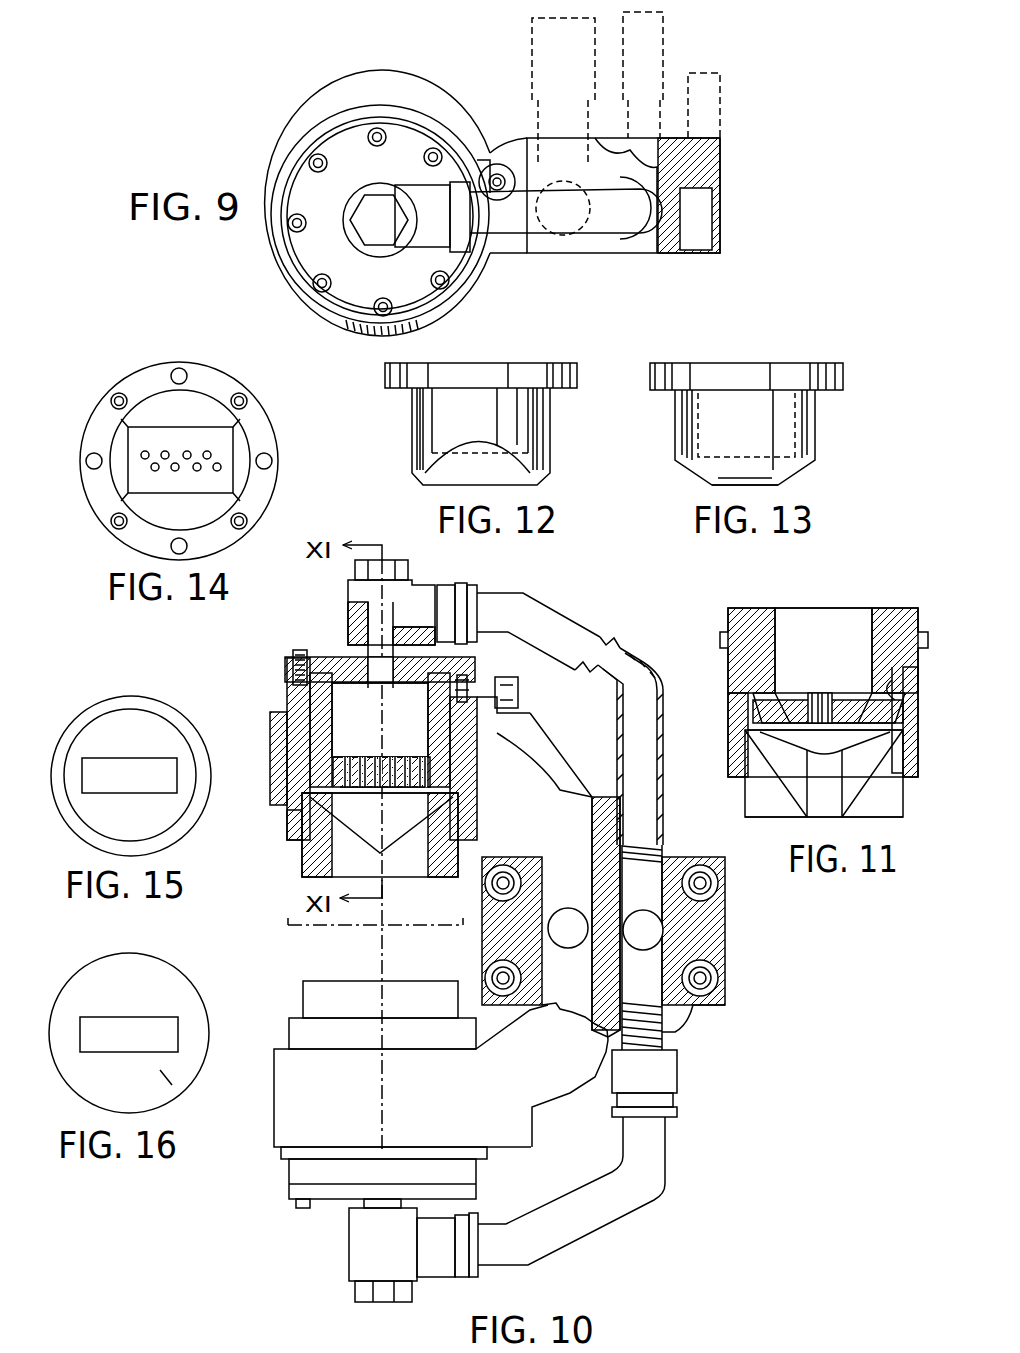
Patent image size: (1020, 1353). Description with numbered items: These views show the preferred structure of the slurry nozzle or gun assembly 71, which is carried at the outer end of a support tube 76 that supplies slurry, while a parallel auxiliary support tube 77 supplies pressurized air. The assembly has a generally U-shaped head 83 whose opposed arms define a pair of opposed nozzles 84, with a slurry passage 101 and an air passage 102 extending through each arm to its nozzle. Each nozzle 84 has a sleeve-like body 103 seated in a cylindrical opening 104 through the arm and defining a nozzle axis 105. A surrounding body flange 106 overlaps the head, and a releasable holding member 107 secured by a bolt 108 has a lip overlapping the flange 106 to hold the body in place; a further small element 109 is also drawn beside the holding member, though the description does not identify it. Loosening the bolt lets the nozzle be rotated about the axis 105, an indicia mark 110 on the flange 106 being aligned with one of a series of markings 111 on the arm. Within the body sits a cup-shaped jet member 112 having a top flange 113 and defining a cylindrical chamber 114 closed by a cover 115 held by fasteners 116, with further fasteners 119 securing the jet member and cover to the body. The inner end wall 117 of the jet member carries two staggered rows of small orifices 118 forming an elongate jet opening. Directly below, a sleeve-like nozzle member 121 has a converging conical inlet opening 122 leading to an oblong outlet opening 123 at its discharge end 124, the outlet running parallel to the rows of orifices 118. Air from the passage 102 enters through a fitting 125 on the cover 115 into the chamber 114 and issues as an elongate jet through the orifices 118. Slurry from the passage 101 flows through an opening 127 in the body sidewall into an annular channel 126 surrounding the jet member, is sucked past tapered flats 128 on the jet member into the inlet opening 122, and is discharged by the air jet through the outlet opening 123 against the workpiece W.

In FIG. 9, the gun assembly 71 is at (363, 58).
In FIG. 10, the gun assembly 71 is at (695, 1098).
In FIG. 9, the support tube 76 is at (532, 42).
In FIG. 10, the support tube 76 is at (560, 935).
In FIG. 9, the auxiliary support tube 77 is at (663, 36).
In FIG. 10, the auxiliary support tube 77 is at (655, 932).
In FIG. 10, the head 83 is at (712, 915).
In FIG. 10, the nozzle 84 is at (296, 846).
In FIG. 10, the slurry passage 101 is at (538, 785).
In FIG. 10, the air passage 102 is at (617, 665).
In FIG. 11, the body 103 is at (738, 690).
In FIG. 10, the body 103 is at (290, 735).
In FIG. 10, the cylindrical opening 104 is at (280, 760).
In FIG. 10, the nozzle axis 105 is at (380, 750).
In FIG. 9, the body flange 106 is at (300, 255).
In FIG. 10, the body flange 106 is at (290, 700).
In FIG. 9, the holding member 107 is at (498, 162).
In FIG. 10, the holding member 107 is at (468, 690).
In FIG. 10, the bolt 108 is at (530, 660).
In FIG. 10, the set screw 109 is at (518, 702).
In FIG. 9, the indicia mark 110 is at (388, 317).
In FIG. 9, the indicia markings 111 is at (372, 338).
In FIG. 12, the jet member 112 is at (554, 442).
In FIG. 13, the jet member 112 is at (818, 417).
In FIG. 11, the jet member 112 is at (760, 650).
In FIG. 10, the jet member 112 is at (300, 755).
In FIG. 10, the top flange 113 is at (298, 672).
In FIG. 11, the cylindrical chamber 114 is at (824, 620).
In FIG. 10, the cylindrical chamber 114 is at (345, 690).
In FIG. 9, the cover 115 is at (312, 262).
In FIG. 10, the cover 115 is at (322, 660).
In FIG. 10, the fasteners 116 is at (298, 650).
In FIG. 11, the end wall 117 is at (813, 697).
In FIG. 10, the end wall 117 is at (430, 768).
In FIG. 14, the orifices 118 is at (165, 452).
In FIG. 11, the orifices 118 is at (833, 700).
In FIG. 10, the orifices 118 is at (430, 780).
In FIG. 10, the fasteners 119 is at (478, 640).
In FIG. 11, the nozzle member 121 is at (760, 795).
In FIG. 15, the nozzle member 121 is at (137, 692).
In FIG. 16, the nozzle member 121 is at (100, 957).
In FIG. 10, the nozzle member 121 is at (442, 875).
In FIG. 11, the inlet opening 122 is at (868, 750).
In FIG. 15, the inlet opening 122 is at (92, 728).
In FIG. 10, the inlet opening 122 is at (315, 800).
In FIG. 11, the outlet opening 123 is at (838, 810).
In FIG. 15, the outlet opening 123 is at (103, 790).
In FIG. 16, the outlet opening 123 is at (107, 1047).
In FIG. 10, the outlet opening 123 is at (425, 865).
In FIG. 11, the discharge end 124 is at (778, 820).
In FIG. 16, the discharge end 124 is at (167, 1078).
In FIG. 10, the fitting 125 is at (418, 612).
In FIG. 11, the annular channel 126 is at (900, 690).
In FIG. 10, the opening 127 is at (480, 735).
In FIG. 14, the flats 128 is at (200, 398).
In FIG. 12, the flats 128 is at (455, 473).
In FIG. 13, the flats 128 is at (802, 465).
In FIG. 11, the flats 128 is at (752, 708).
In FIG. 10, the workpiece W is at (290, 925).